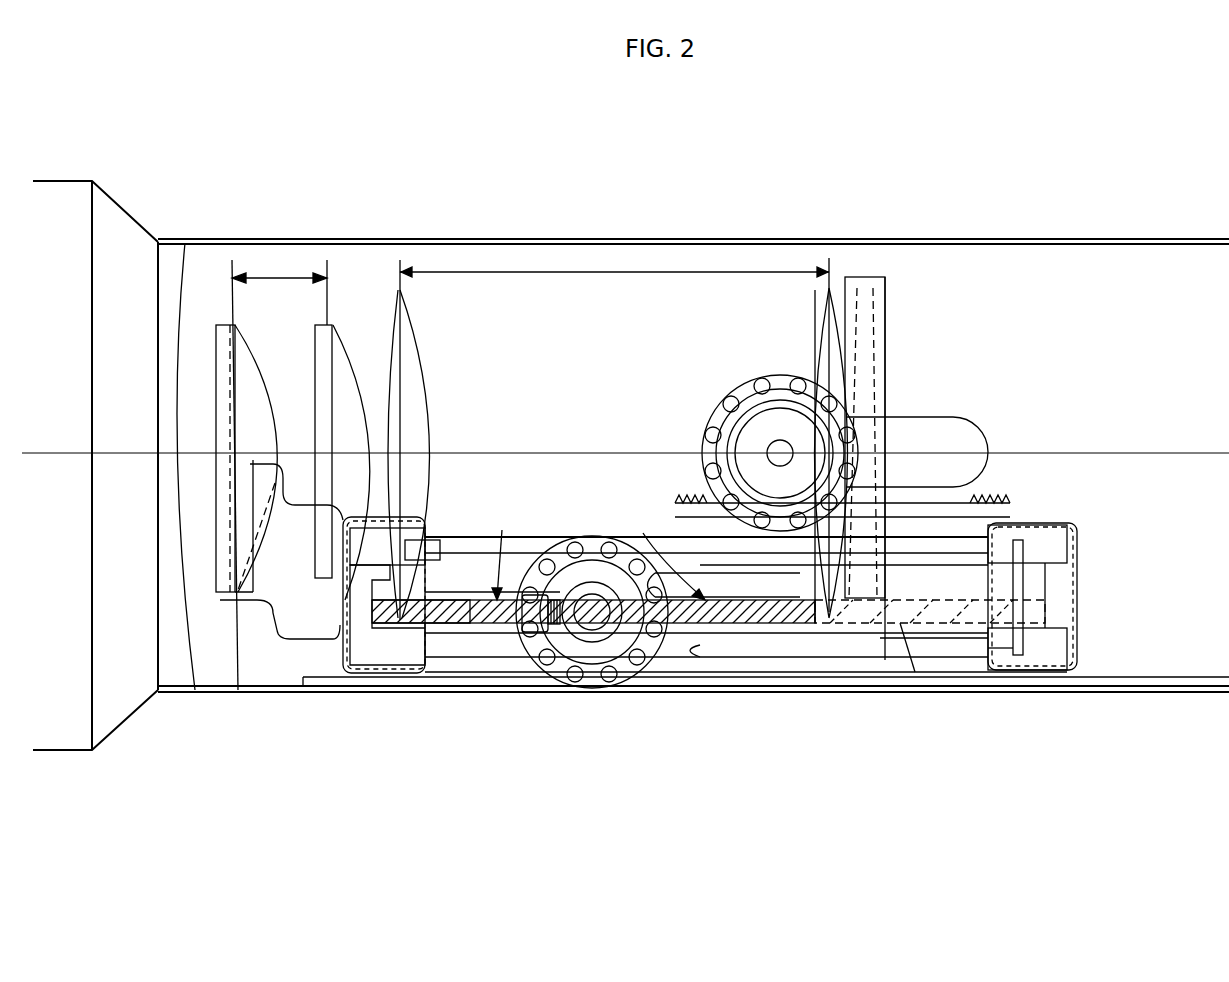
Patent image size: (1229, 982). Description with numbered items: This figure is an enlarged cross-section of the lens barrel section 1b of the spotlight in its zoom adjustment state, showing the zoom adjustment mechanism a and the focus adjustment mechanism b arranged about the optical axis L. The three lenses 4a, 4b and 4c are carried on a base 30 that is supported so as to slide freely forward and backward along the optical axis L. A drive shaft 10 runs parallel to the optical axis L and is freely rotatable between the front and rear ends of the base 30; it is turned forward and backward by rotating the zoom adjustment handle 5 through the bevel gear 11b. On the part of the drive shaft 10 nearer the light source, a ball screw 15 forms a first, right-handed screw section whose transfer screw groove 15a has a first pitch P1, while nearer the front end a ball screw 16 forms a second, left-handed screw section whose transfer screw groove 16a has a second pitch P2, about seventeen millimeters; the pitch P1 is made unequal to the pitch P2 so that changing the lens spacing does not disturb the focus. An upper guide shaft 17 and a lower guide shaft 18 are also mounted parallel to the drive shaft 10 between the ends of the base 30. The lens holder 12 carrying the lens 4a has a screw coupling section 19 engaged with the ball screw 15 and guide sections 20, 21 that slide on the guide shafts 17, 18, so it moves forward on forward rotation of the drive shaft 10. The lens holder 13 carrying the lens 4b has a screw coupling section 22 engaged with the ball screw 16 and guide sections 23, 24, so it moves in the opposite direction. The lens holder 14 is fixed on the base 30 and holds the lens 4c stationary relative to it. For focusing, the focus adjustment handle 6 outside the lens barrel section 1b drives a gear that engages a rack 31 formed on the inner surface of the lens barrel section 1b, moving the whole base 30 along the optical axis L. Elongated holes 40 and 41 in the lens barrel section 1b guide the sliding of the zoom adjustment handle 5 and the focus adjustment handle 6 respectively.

The lens barrel section 1b is at (1160, 238).
The optical axis L is at (78, 453).
The lens 4a is at (230, 322).
The lens 4b is at (400, 290).
The lens 4c is at (868, 285).
The first pitch P1 is at (283, 277).
The second pitch P2 is at (650, 272).
The lens holder 14 is at (885, 350).
The focus adjustment handle 6 is at (740, 395).
The focus adjustment mechanism b is at (701, 430).
The elongated hole 41 is at (960, 417).
The rack 31 is at (1013, 525).
The ball screw 16 is at (808, 622).
The transfer screw groove 16a is at (762, 603).
The ball screw 15 is at (445, 630).
The transfer screw groove 15a is at (440, 612).
The screw coupling section 19 is at (340, 620).
The guide section 21 is at (388, 655).
The guide section 20 is at (410, 538).
The lens holder 12 is at (238, 690).
The zoom adjustment handle 5 is at (600, 683).
The bevel gear 11b is at (543, 640).
The upper guide shaft 17 is at (562, 540).
The elongated hole 40 is at (703, 645).
The zoom adjustment mechanism a is at (728, 655).
The drive shaft 10 is at (758, 625).
The lens holder 13 is at (830, 600).
The base 30 is at (1077, 612).
The guide section 23 is at (1048, 530).
The guide section 24 is at (1015, 655).
The lower guide shaft 18 is at (962, 648).
The screw coupling section 22 is at (905, 627).